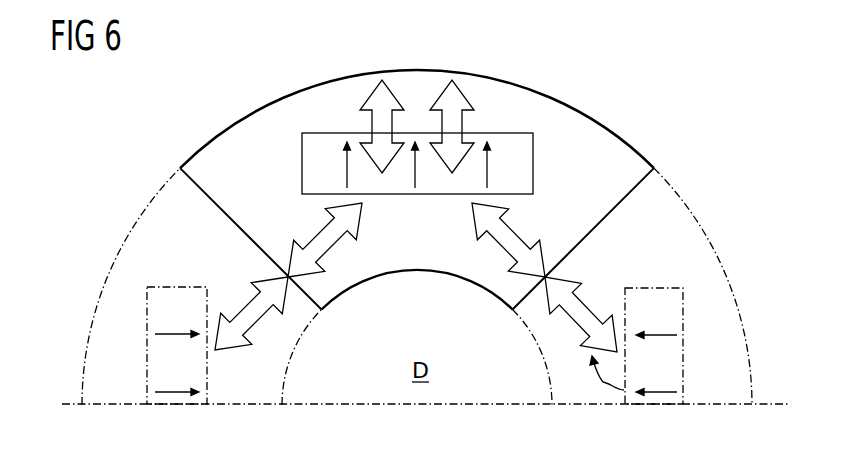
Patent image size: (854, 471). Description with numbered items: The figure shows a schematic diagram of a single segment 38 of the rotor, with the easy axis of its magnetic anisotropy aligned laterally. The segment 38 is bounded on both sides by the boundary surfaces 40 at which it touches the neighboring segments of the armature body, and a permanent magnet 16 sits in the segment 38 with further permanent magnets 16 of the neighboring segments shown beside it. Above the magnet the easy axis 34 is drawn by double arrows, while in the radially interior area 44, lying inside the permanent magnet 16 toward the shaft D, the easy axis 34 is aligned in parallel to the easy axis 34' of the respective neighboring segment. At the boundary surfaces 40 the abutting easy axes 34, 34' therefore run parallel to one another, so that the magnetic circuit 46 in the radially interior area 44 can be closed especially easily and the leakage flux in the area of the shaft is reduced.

The permanent magnet 16 is at (524, 178).
The easy axis 34 is at (416, 178).
The easy axis of the neighboring segment 34' is at (416, 326).
The segment 38 is at (610, 146).
The boundary surface 40 is at (233, 202).
The radially interior area 44 is at (427, 264).
The magnetic circuit 46 is at (603, 382).